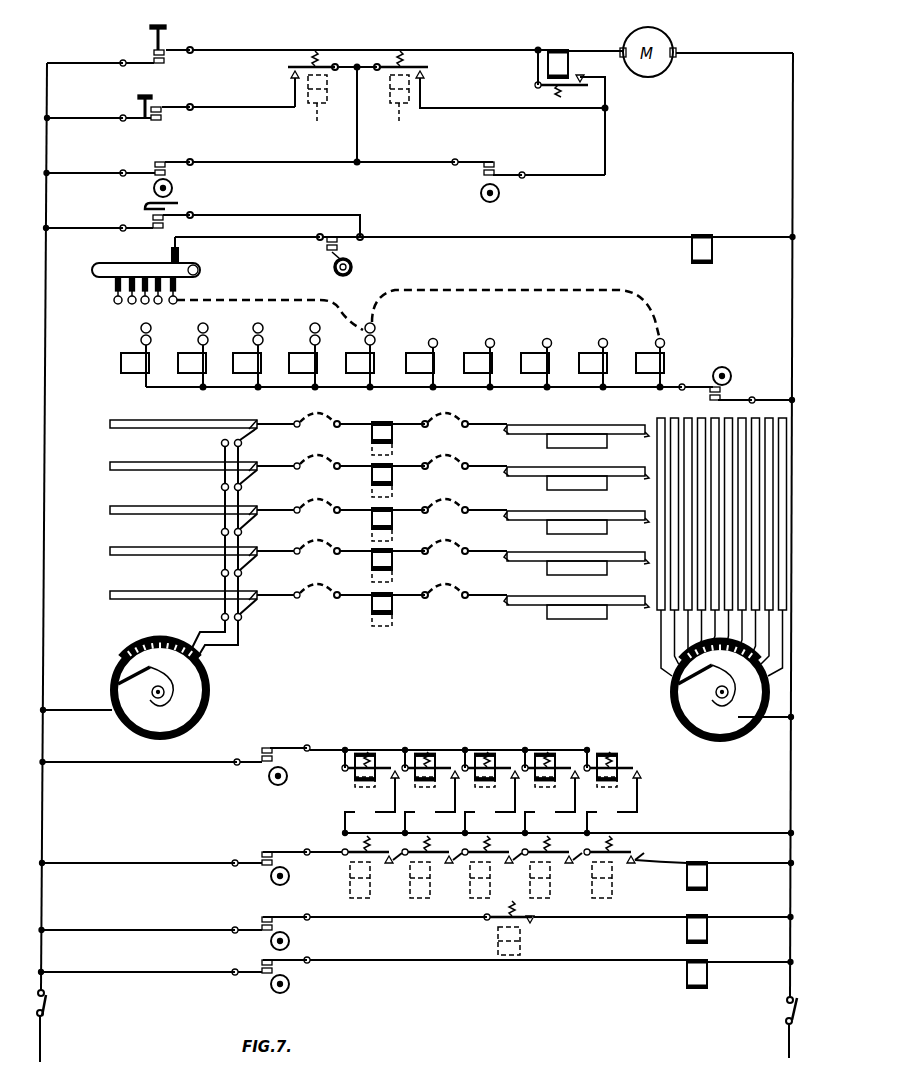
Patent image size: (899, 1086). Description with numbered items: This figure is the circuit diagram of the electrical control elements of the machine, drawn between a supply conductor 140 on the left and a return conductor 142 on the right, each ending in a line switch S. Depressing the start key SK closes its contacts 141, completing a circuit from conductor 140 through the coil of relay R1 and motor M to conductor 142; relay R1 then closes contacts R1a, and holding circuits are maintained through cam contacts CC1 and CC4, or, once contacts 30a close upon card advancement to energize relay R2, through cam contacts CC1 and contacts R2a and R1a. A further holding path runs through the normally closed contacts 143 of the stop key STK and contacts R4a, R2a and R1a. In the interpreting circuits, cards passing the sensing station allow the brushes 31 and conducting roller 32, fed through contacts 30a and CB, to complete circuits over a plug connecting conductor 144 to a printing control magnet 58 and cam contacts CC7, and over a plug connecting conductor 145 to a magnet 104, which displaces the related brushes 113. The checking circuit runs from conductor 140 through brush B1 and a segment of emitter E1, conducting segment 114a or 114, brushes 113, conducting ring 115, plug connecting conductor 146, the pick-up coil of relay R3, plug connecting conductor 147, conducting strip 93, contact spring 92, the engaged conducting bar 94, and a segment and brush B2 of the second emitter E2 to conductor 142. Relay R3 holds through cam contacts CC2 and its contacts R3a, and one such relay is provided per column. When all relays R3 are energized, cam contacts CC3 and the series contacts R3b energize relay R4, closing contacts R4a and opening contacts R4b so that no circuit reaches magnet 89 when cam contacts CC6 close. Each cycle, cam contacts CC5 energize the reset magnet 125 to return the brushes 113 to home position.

The start key SK is at (153, 40).
The stop key STK is at (139, 107).
The contacts of the start key 141 is at (170, 63).
The normally closed contacts of the stop key 143 is at (167, 118).
The contacts of relay R4 R4a is at (293, 63).
The contacts of relay R2 R2a is at (425, 71).
The relay R4 is at (728, 888).
The relay R2 is at (728, 222).
The relay R1 is at (558, 58).
The contacts of relay R1 R1a is at (592, 82).
The conductor 142 is at (792, 150).
The conductor 140 is at (46, 497).
The cam contacts CC1 is at (172, 170).
The cam contacts CC4 is at (500, 172).
The cam contacts CC7 is at (730, 400).
The cam contacts CC2 is at (262, 748).
The cam contacts CC3 is at (262, 852).
The cam contacts CC6 is at (262, 917).
The cam contacts CC5 is at (262, 960).
The contacts 30a is at (168, 223).
The contacts CB is at (346, 245).
The conducting roller 32 is at (143, 264).
The brushes 31 is at (127, 287).
The plug connecting conductor 144 is at (286, 300).
The plug connecting conductor 145 is at (527, 292).
The printing control magnet 58 is at (140, 363).
The magnet 104 is at (425, 368).
The brushes 113 is at (244, 424).
The conducting ring 115 is at (118, 463).
The conducting segment 114a is at (221, 444).
The conducting segment 114 is at (242, 446).
The plug connecting conductor 146 is at (320, 503).
The plug connecting conductor 147 is at (448, 416).
The relay R3 is at (382, 436).
The conducting strip 93 is at (597, 472).
The contact spring element 92 is at (536, 475).
The conducting bars 94 is at (783, 450).
The emitter device E1 is at (195, 689).
The brush of emitter E1 B1 is at (153, 700).
The second emitter device E2 is at (673, 706).
The brush of emitter E2 B2 is at (730, 700).
The contacts of relay R3 R3a is at (392, 770).
The contacts of relay R3 R3b is at (393, 850).
The contacts of relay R4 R4b is at (540, 921).
The magnet 89 is at (700, 930).
The reset magnet 125 is at (700, 975).
The line switches S is at (48, 1005).